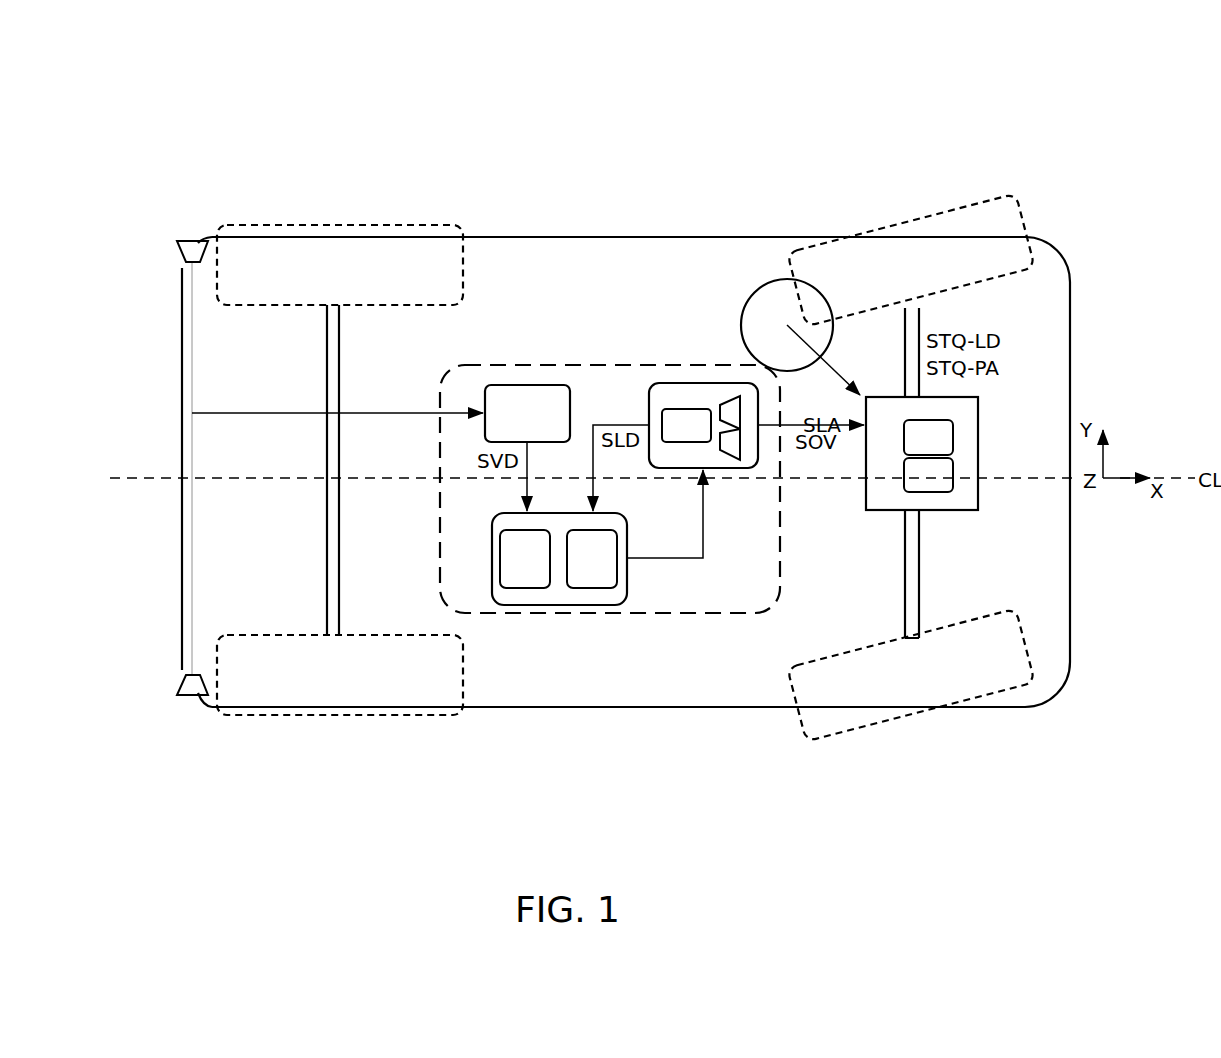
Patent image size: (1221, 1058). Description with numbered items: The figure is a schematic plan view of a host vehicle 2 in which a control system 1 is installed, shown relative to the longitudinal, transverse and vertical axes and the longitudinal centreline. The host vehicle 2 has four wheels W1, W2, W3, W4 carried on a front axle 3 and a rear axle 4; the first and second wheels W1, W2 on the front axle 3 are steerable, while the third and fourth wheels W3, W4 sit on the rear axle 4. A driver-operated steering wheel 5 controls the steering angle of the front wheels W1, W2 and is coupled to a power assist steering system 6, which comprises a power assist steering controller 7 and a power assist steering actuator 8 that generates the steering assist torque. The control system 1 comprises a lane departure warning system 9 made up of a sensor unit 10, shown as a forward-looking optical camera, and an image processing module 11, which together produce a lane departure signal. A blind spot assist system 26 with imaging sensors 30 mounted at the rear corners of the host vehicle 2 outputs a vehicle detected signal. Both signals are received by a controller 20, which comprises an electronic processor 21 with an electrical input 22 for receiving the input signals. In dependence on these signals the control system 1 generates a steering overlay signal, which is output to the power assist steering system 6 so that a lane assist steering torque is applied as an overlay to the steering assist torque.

The control system 1 is at (533, 634).
The host vehicle 2 is at (423, 188).
The front axle 3 is at (927, 551).
The rear axle 4 is at (324, 393).
The steering wheel 5 is at (762, 270).
The power assist steering system 6 is at (963, 451).
The power assist steering controller 7 is at (928, 437).
The power assist steering actuator 8 is at (928, 475).
The lane departure warning system 9 is at (634, 403).
The sensor unit 10 is at (703, 385).
The image processing module 11 is at (686, 425).
The controller 20 is at (559, 641).
The electronic processor 21 is at (525, 559).
The electrical input 22 is at (592, 559).
The blind spot assist system 26 is at (527, 413).
The imaging sensors 30 is at (190, 240).
The first wheel W1 is at (900, 223).
The second wheel W2 is at (895, 722).
The third wheel W3 is at (280, 223).
The fourth wheel W4 is at (280, 717).